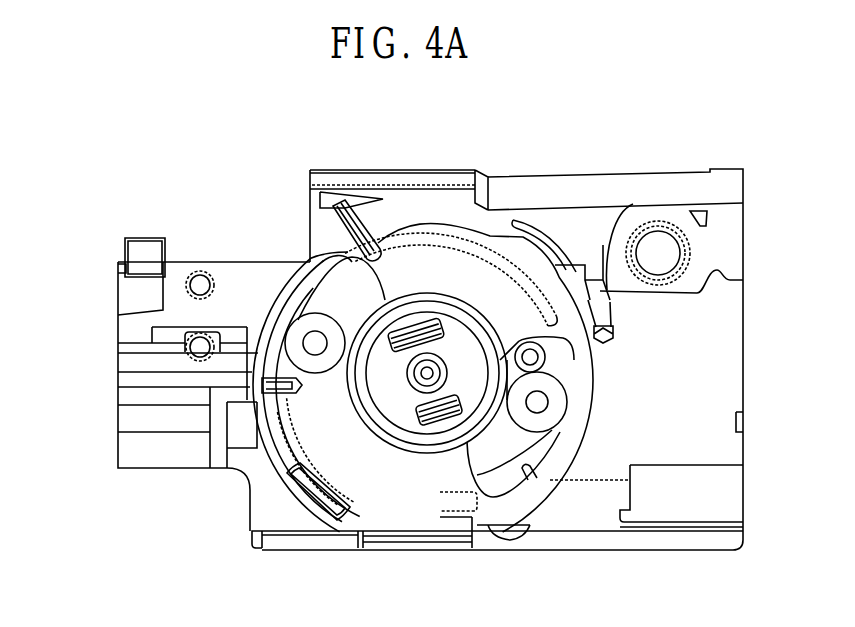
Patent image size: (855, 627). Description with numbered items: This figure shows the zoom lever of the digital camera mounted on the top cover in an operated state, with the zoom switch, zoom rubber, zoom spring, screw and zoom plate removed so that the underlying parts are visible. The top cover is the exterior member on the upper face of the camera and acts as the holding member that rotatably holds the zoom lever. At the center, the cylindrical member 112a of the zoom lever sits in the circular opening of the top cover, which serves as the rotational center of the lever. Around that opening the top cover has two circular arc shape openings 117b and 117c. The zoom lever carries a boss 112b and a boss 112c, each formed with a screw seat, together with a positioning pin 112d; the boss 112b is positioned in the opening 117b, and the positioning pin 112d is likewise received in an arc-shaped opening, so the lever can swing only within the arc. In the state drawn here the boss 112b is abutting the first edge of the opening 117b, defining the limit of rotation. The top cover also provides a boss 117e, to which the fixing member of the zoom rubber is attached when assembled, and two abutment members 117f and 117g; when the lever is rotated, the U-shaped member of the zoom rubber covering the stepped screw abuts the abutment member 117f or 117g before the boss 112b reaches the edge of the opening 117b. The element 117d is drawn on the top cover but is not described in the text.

The cylindrical member 112a is at (403, 412).
The boss 112b is at (308, 326).
The boss 112c is at (550, 404).
The positioning pin 112d is at (535, 356).
The circular arc shape opening 117b is at (333, 254).
The circular arc shape opening 117c is at (530, 480).
The arm 117d is at (587, 273).
The boss 117e is at (190, 347).
The abutment member 117f is at (257, 392).
The abutment member 117g is at (352, 222).